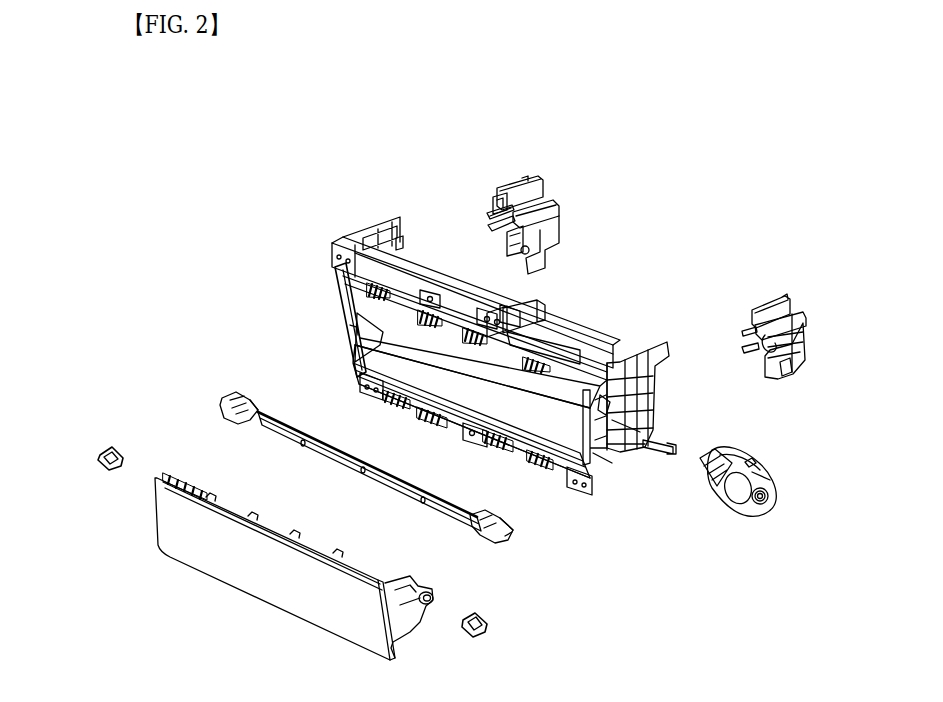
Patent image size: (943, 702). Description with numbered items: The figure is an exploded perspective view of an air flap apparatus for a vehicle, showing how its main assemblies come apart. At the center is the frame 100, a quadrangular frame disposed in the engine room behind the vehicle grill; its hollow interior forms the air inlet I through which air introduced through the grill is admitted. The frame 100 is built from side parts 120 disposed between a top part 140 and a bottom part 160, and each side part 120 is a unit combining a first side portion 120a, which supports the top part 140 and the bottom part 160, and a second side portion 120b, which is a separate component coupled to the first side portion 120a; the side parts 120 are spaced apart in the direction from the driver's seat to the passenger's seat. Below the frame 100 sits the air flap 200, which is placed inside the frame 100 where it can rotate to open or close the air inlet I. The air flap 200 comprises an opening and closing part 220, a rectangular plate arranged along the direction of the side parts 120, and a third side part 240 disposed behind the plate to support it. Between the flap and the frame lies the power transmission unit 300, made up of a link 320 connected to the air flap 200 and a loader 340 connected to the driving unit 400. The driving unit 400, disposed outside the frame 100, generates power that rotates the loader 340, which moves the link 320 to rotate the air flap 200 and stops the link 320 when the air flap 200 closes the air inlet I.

The frame 100 is at (313, 240).
The side parts 120 is at (520, 282).
The first side portion 120a is at (358, 327).
The second side portion 120b is at (770, 307).
The top part 140 is at (560, 337).
The bottom part 160 is at (563, 462).
The air inlet I is at (467, 373).
The air flap 200 is at (252, 574).
The opening and closing part 220 is at (265, 568).
The third side part 240 is at (403, 627).
The power transmission unit 300 is at (334, 517).
The link 320 is at (487, 625).
The loader 340 is at (210, 382).
The driving unit 400 is at (762, 523).